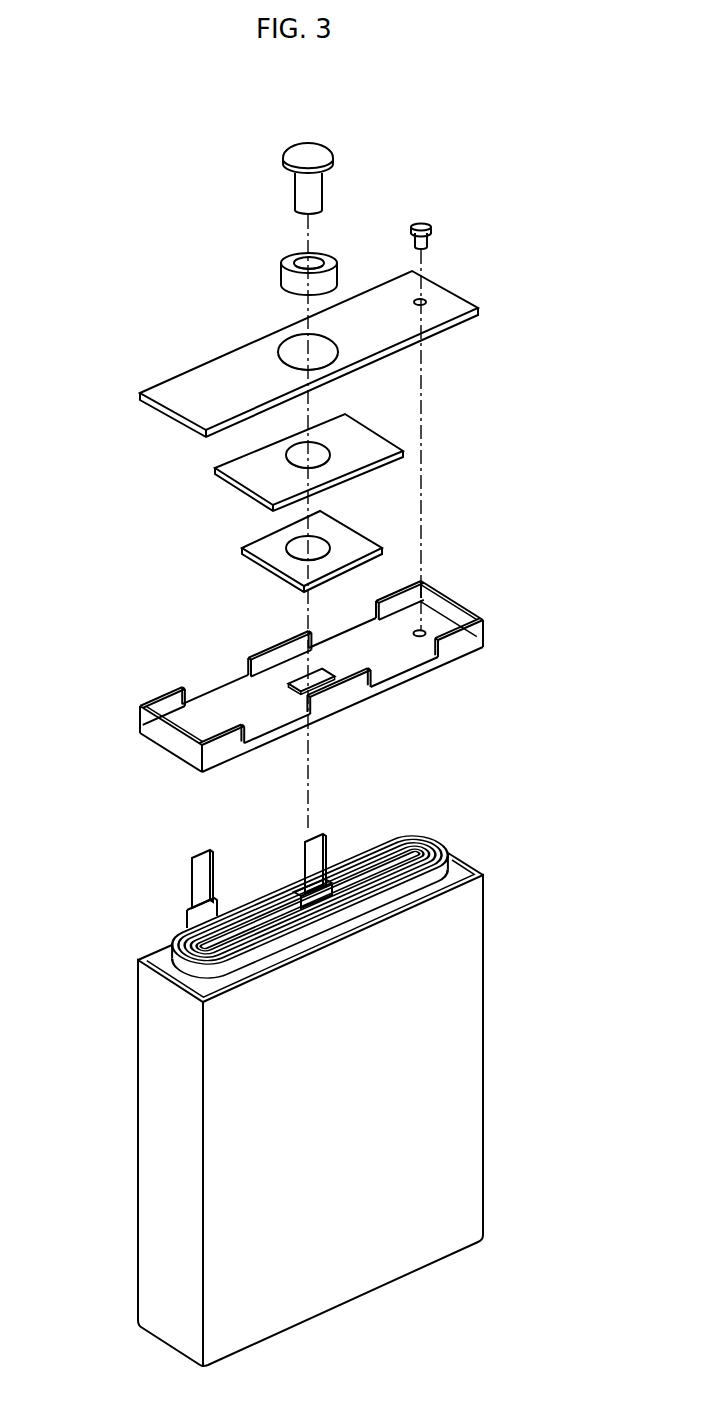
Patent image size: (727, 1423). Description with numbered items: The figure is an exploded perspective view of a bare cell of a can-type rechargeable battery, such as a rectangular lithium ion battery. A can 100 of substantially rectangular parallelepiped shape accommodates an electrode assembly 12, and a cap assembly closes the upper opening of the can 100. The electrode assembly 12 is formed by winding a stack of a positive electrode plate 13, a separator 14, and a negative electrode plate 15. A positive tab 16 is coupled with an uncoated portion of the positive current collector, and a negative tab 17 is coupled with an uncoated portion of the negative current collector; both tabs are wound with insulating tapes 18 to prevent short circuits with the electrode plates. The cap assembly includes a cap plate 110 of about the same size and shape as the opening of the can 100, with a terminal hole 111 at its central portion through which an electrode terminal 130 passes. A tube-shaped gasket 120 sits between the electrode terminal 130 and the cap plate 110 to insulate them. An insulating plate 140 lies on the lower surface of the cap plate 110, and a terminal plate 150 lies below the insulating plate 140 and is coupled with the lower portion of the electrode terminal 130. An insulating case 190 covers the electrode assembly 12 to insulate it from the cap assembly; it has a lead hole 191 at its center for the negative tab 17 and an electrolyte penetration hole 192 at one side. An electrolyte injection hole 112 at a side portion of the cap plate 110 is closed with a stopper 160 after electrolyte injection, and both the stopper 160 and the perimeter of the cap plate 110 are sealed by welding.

The can 100 is at (462, 1053).
The electrode assembly 12 is at (307, 857).
The positive electrode plate 13 is at (310, 900).
The separator 14 is at (420, 848).
The negative electrode plate 15 is at (310, 900).
The positive tab 16 is at (200, 887).
The negative tab 17 is at (300, 862).
The insulating tape 18 is at (335, 897).
The cap plate 110 is at (310, 336).
The terminal hole 111 is at (293, 352).
The electrolyte injection hole 112 is at (425, 300).
The gasket 120 is at (290, 268).
The electrode terminal 130 is at (293, 153).
The insulating plate 140 is at (247, 480).
The terminal plate 150 is at (275, 553).
The stopper 160 is at (424, 222).
The insulating case 190 is at (257, 657).
The lead hole 191 is at (300, 678).
The electrolyte penetration hole 192 is at (424, 628).